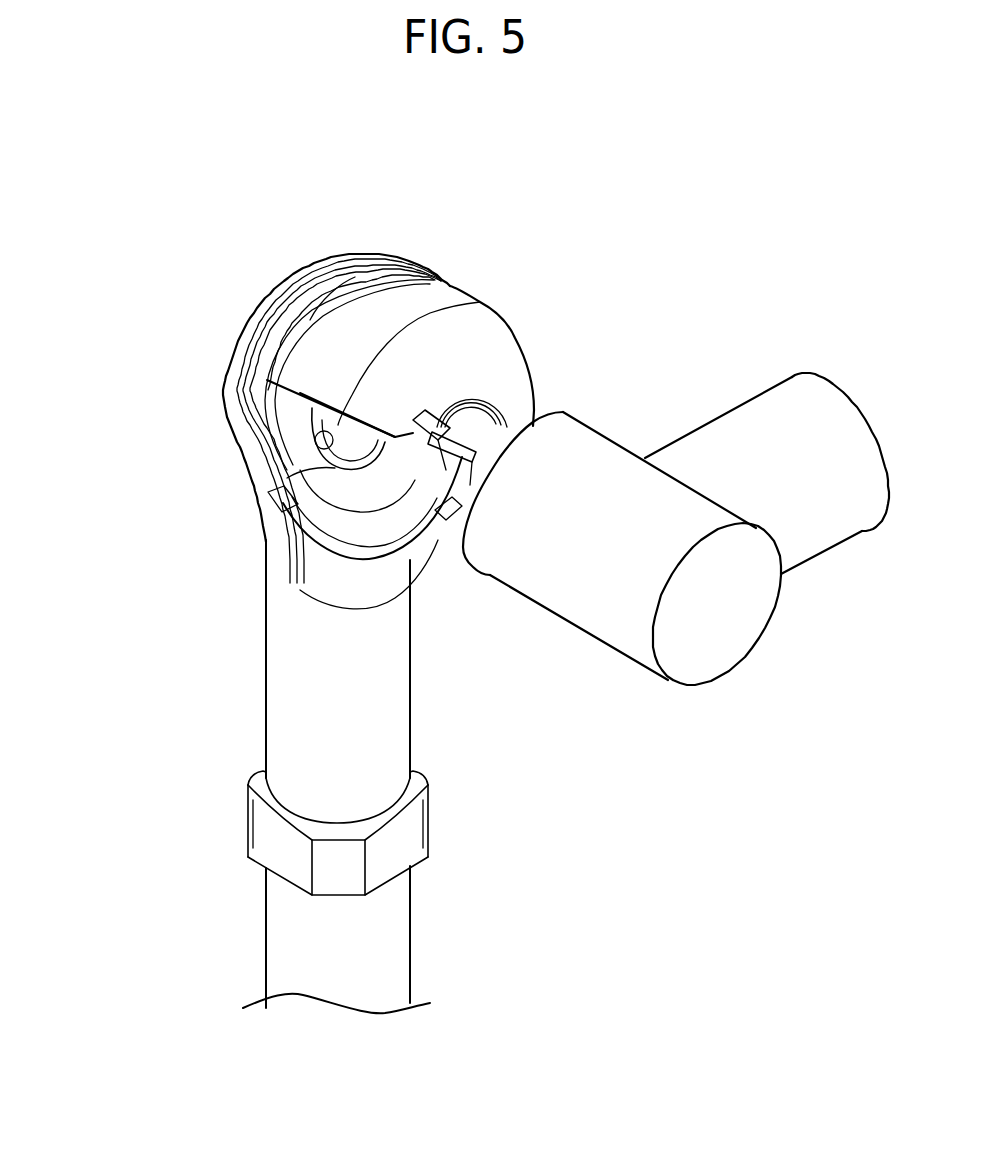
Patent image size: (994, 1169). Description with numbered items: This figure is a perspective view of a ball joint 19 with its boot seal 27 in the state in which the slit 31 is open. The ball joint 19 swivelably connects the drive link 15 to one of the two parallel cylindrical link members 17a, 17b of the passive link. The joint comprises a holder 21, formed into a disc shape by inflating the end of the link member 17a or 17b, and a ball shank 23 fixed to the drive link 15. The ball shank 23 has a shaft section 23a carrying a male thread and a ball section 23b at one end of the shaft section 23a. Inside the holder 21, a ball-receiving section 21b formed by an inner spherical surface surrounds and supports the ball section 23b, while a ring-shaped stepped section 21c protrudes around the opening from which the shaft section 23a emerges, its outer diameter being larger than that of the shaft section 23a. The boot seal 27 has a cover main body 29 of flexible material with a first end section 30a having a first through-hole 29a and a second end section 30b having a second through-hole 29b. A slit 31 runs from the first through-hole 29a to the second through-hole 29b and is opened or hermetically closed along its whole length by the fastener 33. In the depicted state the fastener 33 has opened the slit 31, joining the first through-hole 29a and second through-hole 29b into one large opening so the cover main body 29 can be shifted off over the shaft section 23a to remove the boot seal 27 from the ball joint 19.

The drive link 15 is at (730, 390).
The link member 17a is at (246, 776).
The link member 17b is at (253, 939).
The ball joint 19 is at (163, 278).
The holder 21 is at (280, 398).
The ball-receiving section 21b is at (287, 478).
The stepped section 21c is at (273, 427).
The ball shank 23 is at (259, 553).
The shaft section 23a is at (330, 600).
The ball section 23b is at (358, 497).
The boot seal 27 is at (517, 292).
The cover main body 29 is at (326, 409).
The first through-hole 29a is at (442, 517).
The second through-hole 29b is at (257, 495).
The first end section 30a is at (473, 388).
The second end section 30b is at (355, 277).
The slit 31 is at (366, 540).
The fastener 33 is at (413, 433).